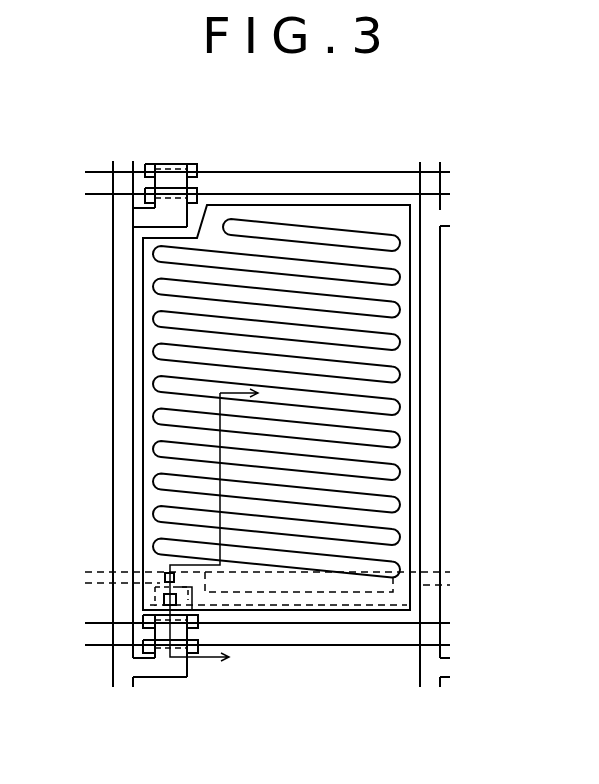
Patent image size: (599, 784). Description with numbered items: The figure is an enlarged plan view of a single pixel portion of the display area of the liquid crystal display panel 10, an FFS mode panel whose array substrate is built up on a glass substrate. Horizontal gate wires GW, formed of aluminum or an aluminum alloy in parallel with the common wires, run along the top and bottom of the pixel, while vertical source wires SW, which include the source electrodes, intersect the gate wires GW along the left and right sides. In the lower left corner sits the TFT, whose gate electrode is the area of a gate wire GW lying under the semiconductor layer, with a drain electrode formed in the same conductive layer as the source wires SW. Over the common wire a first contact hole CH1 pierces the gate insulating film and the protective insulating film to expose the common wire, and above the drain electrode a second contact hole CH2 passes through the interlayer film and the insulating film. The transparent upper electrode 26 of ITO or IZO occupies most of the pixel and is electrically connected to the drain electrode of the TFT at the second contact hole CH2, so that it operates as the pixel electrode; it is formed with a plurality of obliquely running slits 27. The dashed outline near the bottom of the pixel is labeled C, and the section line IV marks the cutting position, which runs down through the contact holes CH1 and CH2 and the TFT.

The liquid crystal display panel 10 is at (96, 121).
The gate wire GW is at (387, 183).
The source wire SW is at (124, 266).
The upper electrode 26 is at (168, 338).
The slit 27 is at (373, 310).
The section line IV- IV is at (227, 529).
The first contact hole CH1 is at (166, 574).
The second contact hole CH2 is at (164, 600).
The storage capacitor C is at (411, 587).
The thin film transistor TFT is at (208, 679).